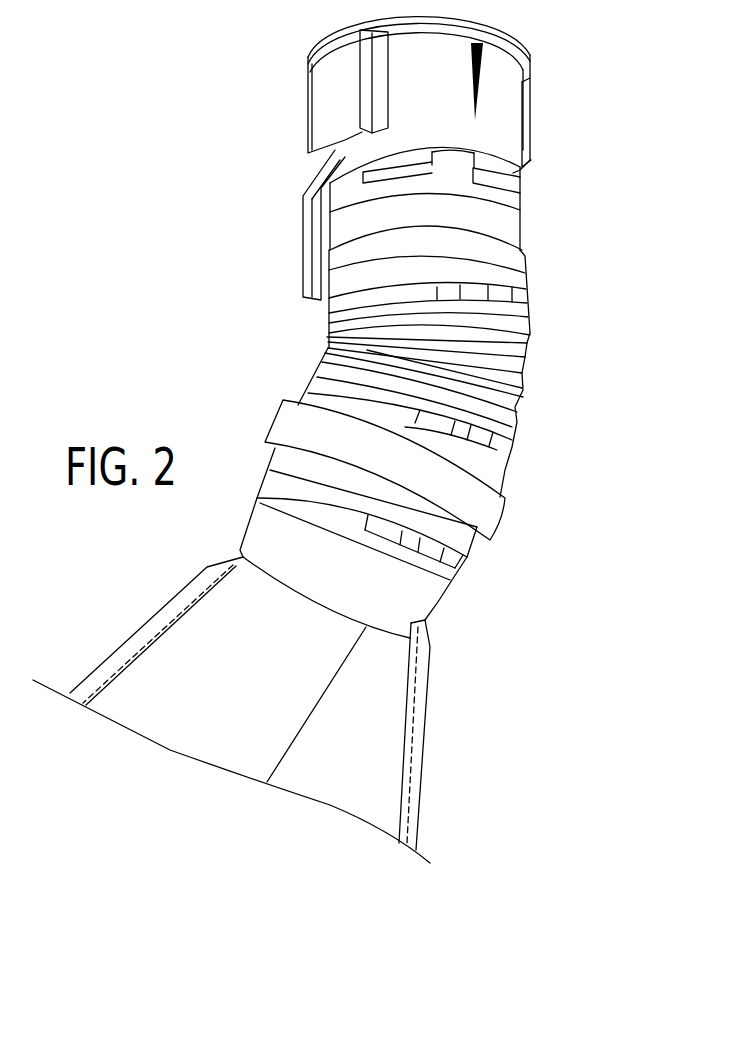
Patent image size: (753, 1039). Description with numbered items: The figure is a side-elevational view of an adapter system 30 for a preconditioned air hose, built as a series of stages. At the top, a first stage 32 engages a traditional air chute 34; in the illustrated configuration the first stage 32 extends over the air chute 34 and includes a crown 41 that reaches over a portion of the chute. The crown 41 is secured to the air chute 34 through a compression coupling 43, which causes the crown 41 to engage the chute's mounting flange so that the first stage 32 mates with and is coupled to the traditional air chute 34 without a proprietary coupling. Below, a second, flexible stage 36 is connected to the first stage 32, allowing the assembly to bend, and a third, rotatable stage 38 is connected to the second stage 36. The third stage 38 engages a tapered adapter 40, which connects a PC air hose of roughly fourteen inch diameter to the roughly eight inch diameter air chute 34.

The adapter system 30 is at (500, 552).
The first stage 32 is at (545, 271).
The air chute 34 is at (548, 116).
The second stage 36 is at (545, 372).
The third stage 38 is at (260, 404).
The tapered adapter 40 is at (217, 733).
The crown 41 is at (458, 178).
The compression coupling 43 is at (402, 160).